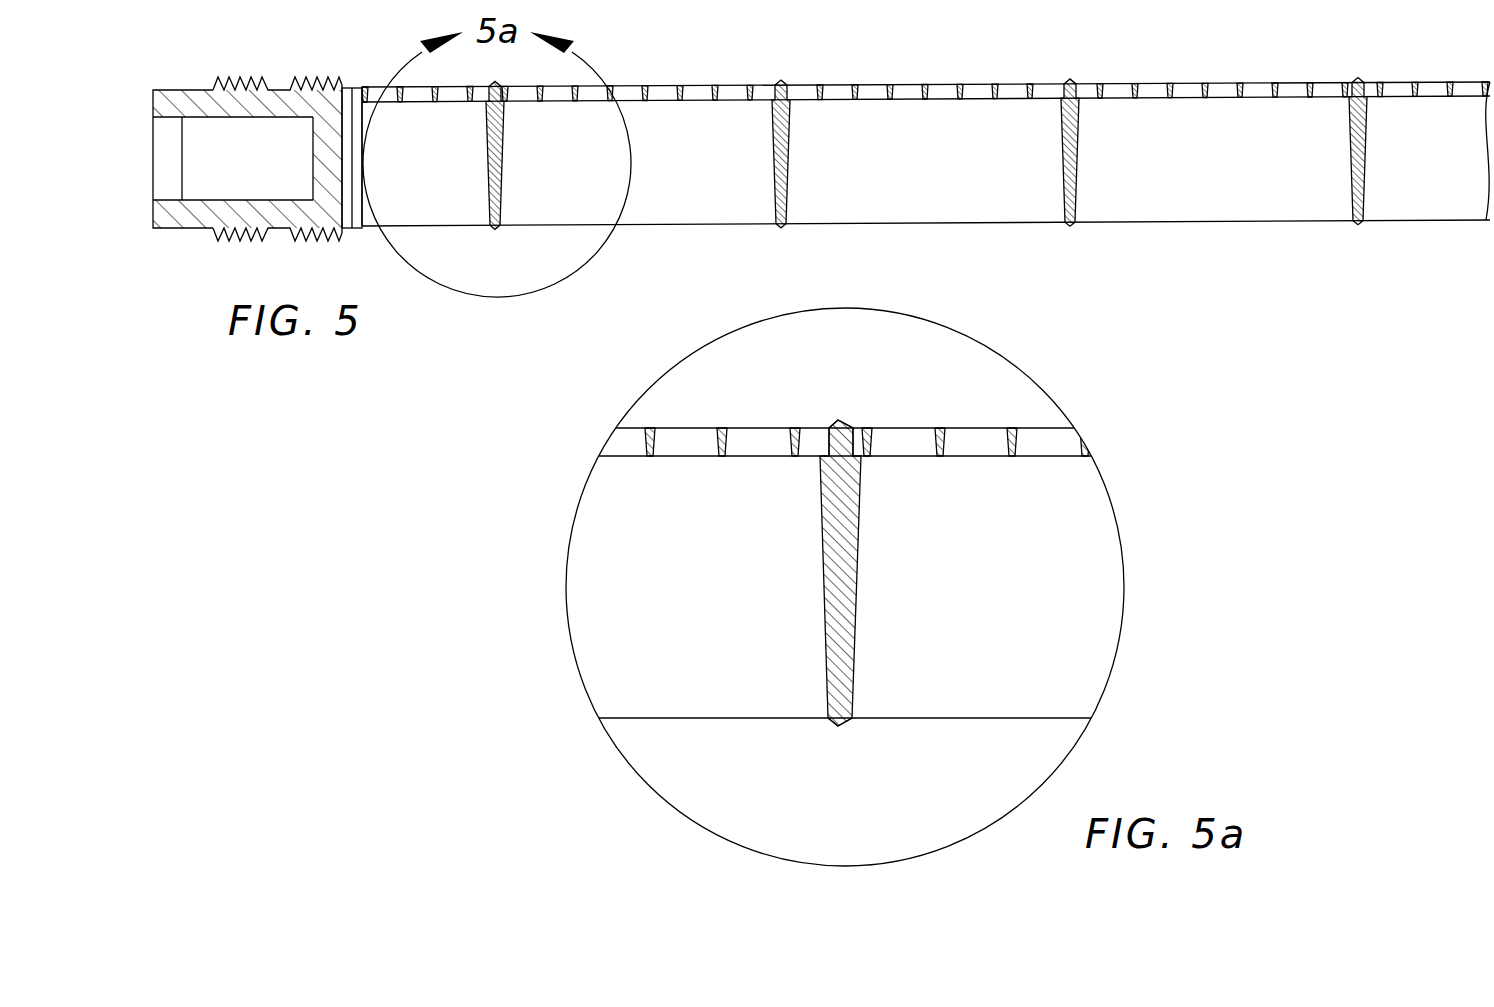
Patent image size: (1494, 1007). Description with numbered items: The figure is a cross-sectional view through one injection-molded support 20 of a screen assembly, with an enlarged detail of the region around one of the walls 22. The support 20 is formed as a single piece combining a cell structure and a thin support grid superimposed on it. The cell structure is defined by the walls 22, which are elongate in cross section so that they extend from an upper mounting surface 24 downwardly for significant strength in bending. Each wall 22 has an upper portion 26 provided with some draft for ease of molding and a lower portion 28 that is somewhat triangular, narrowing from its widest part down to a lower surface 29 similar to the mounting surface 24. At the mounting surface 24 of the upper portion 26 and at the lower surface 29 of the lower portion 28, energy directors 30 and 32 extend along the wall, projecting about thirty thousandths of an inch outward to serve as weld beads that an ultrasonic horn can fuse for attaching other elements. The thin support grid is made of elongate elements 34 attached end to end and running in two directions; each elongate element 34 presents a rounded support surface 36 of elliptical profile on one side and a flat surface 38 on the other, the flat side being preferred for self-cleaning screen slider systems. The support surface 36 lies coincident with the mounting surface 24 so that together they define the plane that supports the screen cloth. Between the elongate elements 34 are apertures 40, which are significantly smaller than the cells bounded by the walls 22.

In FIG. 5, the support 20 is at (698, 84).
In FIG. 5, the wall 22 is at (1081, 133).
In FIG. 5A, the upper mounting surface 24 is at (829, 423).
In FIG. 5A, the upper portion 26 is at (854, 431).
In FIG. 5A, the lower portion 28 is at (858, 532).
In FIG. 5A, the lower surface 29 is at (833, 721).
In FIG. 5A, the energy director 30 is at (838, 420).
In FIG. 5A, the energy director 32 is at (841, 724).
In FIG. 5A, the elongate element 34 is at (1006, 440).
In FIG. 5A, the support surface 36 is at (686, 428).
In FIG. 5A, the flat surface 38 is at (686, 457).
In FIG. 5A, the aperture 40 is at (755, 457).